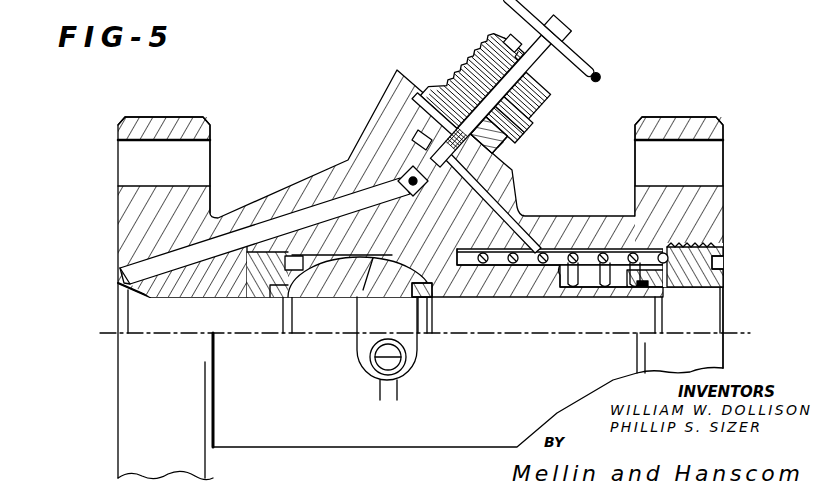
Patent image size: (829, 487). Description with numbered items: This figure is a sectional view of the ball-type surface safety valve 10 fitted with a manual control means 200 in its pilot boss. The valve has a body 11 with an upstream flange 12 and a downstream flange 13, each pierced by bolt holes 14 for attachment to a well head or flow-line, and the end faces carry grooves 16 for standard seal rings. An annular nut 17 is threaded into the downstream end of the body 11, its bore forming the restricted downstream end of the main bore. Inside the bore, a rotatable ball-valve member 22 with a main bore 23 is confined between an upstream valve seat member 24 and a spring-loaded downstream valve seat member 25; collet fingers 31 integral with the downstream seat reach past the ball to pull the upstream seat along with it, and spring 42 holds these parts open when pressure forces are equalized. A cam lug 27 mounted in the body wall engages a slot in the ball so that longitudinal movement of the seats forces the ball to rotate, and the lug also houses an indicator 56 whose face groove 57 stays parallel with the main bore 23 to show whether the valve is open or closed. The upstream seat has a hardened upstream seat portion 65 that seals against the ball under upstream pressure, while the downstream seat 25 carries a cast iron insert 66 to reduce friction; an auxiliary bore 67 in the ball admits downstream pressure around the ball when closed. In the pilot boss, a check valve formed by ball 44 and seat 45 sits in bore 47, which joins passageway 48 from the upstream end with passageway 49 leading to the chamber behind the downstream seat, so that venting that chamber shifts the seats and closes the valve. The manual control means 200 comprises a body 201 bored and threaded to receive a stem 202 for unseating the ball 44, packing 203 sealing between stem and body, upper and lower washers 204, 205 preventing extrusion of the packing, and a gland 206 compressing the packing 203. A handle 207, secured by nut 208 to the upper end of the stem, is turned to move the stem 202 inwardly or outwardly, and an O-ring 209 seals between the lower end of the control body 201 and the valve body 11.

The ball-type surface safety valve 10 is at (150, 106).
The body 11 is at (132, 236).
The upstream flange 12 is at (205, 117).
The downstream flange 13 is at (722, 120).
The bolt holes 14 is at (128, 146).
The grooves 16 is at (710, 228).
The annular nut 17 is at (720, 254).
The ball-valve member 22 is at (310, 292).
The main bore 23 is at (360, 293).
The upstream valve seat member 24 is at (147, 296).
The downstream valve seat member 25 is at (537, 292).
The cam lug 27 is at (366, 374).
The collet fingers 31 is at (278, 256).
The spring 42 is at (578, 252).
The ball 44 is at (392, 160).
The seat 45 is at (406, 170).
The bore 47 is at (422, 146).
The passageway 48 is at (122, 276).
The passageway 49 is at (508, 216).
The indicator 56 is at (385, 372).
The groove 57 is at (392, 364).
The hardened upstream seat portion 65 is at (277, 292).
The cast iron insert 66 is at (432, 290).
The auxiliary bore 67 is at (366, 290).
The manual control means 200 is at (474, 54).
The body 201 is at (540, 94).
The stem 202 is at (544, 60).
The packing 203 is at (534, 120).
The upper washer 204 is at (536, 110).
The lower washer 205 is at (520, 132).
The gland 206 is at (520, 50).
The handle 207 is at (601, 76).
The nut 208 is at (566, 36).
The O-ring 209 is at (440, 108).